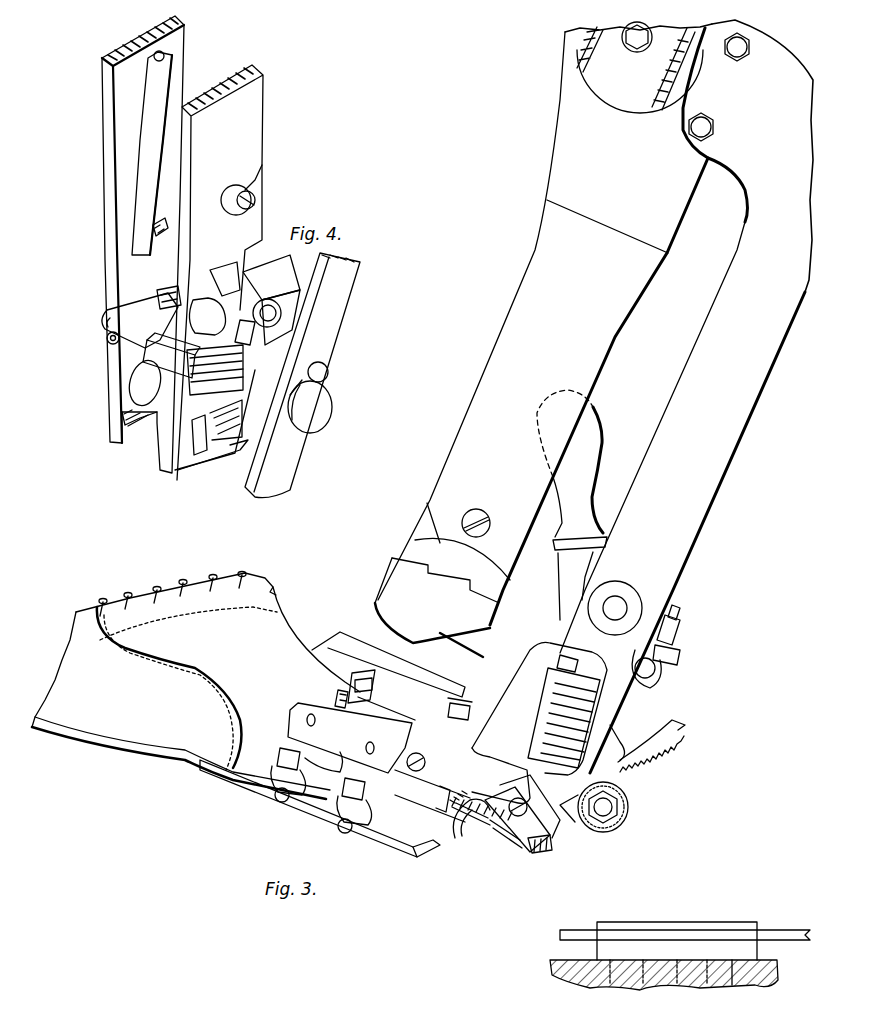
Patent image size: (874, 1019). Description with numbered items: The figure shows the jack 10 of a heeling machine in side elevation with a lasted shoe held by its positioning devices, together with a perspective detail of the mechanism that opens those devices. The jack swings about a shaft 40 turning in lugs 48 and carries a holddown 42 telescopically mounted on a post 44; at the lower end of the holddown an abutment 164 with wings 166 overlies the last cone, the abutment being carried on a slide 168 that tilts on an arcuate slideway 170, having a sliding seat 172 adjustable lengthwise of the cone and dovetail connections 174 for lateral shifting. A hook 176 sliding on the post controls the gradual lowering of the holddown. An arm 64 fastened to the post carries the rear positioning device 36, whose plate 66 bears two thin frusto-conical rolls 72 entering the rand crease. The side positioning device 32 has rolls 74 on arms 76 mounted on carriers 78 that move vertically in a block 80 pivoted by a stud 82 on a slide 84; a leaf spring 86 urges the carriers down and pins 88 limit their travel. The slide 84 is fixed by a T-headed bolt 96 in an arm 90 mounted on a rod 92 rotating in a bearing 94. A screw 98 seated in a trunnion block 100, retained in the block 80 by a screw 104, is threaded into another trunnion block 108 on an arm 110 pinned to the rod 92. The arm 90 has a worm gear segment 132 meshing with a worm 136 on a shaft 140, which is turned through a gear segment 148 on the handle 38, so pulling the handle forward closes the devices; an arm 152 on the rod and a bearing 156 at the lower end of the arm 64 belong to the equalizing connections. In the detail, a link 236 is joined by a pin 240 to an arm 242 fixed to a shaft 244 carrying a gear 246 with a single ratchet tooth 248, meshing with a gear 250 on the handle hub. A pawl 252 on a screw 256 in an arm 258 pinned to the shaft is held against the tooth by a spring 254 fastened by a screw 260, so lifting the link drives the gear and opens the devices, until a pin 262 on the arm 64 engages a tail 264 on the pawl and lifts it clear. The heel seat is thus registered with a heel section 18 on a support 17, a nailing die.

In FIG. 3, the jack 10 is at (515, 235).
In FIG. 3, the support 17 is at (562, 960).
In FIG. 3, the heel section 18 is at (696, 922).
In FIG. 3, the positioning device 32 is at (293, 826).
In FIG. 3, the positioning device 36 is at (451, 875).
In FIG. 4, the handle 38 is at (343, 285).
In FIG. 3, the handle 38 is at (602, 412).
In FIG. 3, the shaft 40 is at (615, 40).
In FIG. 3, the holddown 42 is at (486, 380).
In FIG. 3, the post 44 is at (560, 140).
In FIG. 3, the lugs 48 is at (595, 72).
In FIG. 4, the arm 64 is at (104, 83).
In FIG. 3, the arm 64 is at (730, 441).
In FIG. 3, the plate 66 is at (468, 840).
In FIG. 3, the frusto-conical rolls 72 is at (437, 846).
In FIG. 3, the frusto-conical rolls 74 is at (272, 782).
In FIG. 3, the arms 76 is at (278, 798).
In FIG. 3, the carrier 78 is at (285, 750).
In FIG. 3, the block 80 is at (305, 712).
In FIG. 3, the stud 82 is at (362, 645).
In FIG. 3, the slide 84 is at (350, 688).
In FIG. 3, the leaf spring 86 is at (315, 765).
In FIG. 3, the pins 88 is at (365, 745).
In FIG. 3, the arm 90 is at (522, 683).
In FIG. 3, the rod 92 is at (575, 660).
In FIG. 3, the bearing 94 is at (553, 750).
In FIG. 3, the T-headed bolt 96 is at (460, 700).
In FIG. 3, the screw 98 is at (548, 853).
In FIG. 3, the trunnion block 100 is at (415, 795).
In FIG. 3, the screw 104 is at (420, 757).
In FIG. 3, the trunnion block 108 is at (505, 848).
In FIG. 3, the arm 110 is at (548, 842).
In FIG. 3, the worm gear segment 132 is at (570, 810).
In FIG. 3, the worm 136 is at (626, 800).
In FIG. 3, the shaft 140 is at (617, 812).
In FIG. 3, the gear segment 148 is at (683, 730).
In FIG. 3, the arm 152 is at (600, 712).
In FIG. 4, the bearing 156 is at (140, 428).
In FIG. 3, the abutment 164 is at (392, 570).
In FIG. 3, the wings 166 is at (385, 622).
In FIG. 3, the slide 168 is at (418, 545).
In FIG. 3, the arcuate slideway 170 is at (427, 503).
In FIG. 3, the sliding seat 172 is at (485, 640).
In FIG. 3, the dovetail connections 174 is at (498, 598).
In FIG. 3, the hook 176 is at (752, 40).
In FIG. 4, the link 236 is at (165, 82).
In FIG. 3, the link 236 is at (678, 583).
In FIG. 4, the pin 240 is at (145, 340).
In FIG. 3, the pin 240 is at (643, 672).
In FIG. 4, the arm 242 is at (118, 300).
In FIG. 3, the arm 242 is at (660, 676).
In FIG. 4, the shaft 244 is at (275, 312).
In FIG. 3, the shaft 244 is at (615, 605).
In FIG. 4, the gear 246 is at (262, 300).
In FIG. 4, the ratchet tooth 248 is at (248, 282).
In FIG. 4, the gear 250 is at (215, 440).
In FIG. 4, the pawl 252 is at (235, 330).
In FIG. 4, the spring 254 is at (205, 296).
In FIG. 4, the screw 256 is at (205, 385).
In FIG. 4, the arm 258 is at (222, 276).
In FIG. 3, the arm 258 is at (672, 632).
In FIG. 4, the screw 260 is at (157, 298).
In FIG. 3, the screw 260 is at (677, 606).
In FIG. 4, the pin 262 is at (256, 200).
In FIG. 4, the tail 264 is at (165, 355).
In FIG. 3, the tail 264 is at (678, 658).